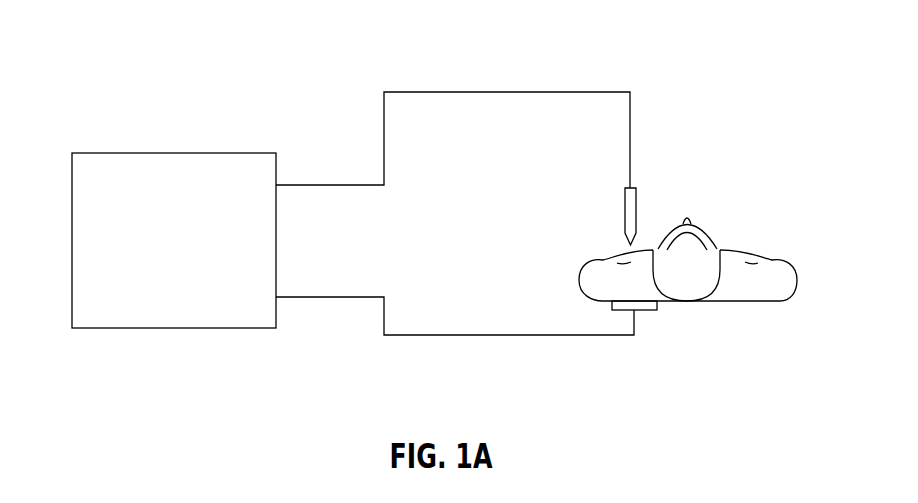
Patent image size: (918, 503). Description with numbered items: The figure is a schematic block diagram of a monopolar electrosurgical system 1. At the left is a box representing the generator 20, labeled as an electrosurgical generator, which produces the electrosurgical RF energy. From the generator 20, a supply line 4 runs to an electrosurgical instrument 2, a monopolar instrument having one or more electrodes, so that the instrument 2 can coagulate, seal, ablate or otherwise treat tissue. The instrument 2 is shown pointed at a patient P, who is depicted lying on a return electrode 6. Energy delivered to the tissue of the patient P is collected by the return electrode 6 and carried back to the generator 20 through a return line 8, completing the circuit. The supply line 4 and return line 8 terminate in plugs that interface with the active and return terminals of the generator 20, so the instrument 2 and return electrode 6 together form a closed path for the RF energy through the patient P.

The electrosurgical system 1 is at (263, 62).
The generator 20 is at (103, 153).
The supply line 4 is at (507, 92).
The return line 8 is at (523, 335).
The electrosurgical instrument 2 is at (623, 215).
The return electrode 6 is at (648, 310).
The patient P is at (762, 245).